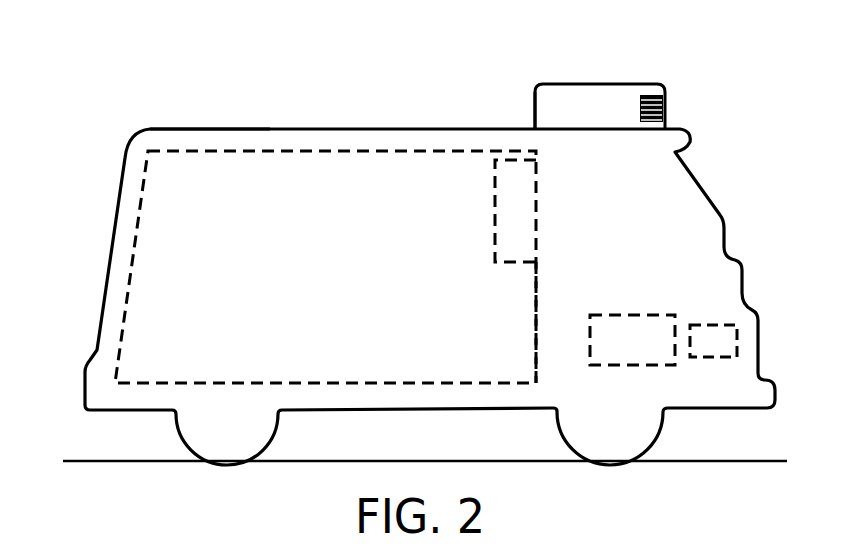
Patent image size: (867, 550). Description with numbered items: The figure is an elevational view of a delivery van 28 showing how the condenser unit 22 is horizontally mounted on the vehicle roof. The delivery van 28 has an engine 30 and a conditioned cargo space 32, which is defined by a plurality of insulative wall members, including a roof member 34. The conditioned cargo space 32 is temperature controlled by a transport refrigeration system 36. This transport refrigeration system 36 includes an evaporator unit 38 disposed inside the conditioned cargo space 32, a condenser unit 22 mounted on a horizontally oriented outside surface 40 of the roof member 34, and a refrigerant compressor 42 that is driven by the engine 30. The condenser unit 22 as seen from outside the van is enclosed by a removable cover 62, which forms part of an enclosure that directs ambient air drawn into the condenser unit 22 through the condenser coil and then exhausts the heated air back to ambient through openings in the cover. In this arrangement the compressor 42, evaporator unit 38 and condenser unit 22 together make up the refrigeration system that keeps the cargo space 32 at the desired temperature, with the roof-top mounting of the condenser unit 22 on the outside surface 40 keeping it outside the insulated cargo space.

The condenser unit 22 is at (612, 84).
The delivery van 28 is at (342, 128).
The engine 30 is at (630, 313).
The conditioned cargo space 32 is at (528, 327).
The roof member 34 is at (262, 138).
The transport refrigeration system 36 is at (513, 155).
The evaporator unit 38 is at (495, 240).
The outside surface 40 is at (203, 128).
The refrigerant compressor 42 is at (710, 325).
The removable cover 62 is at (568, 90).